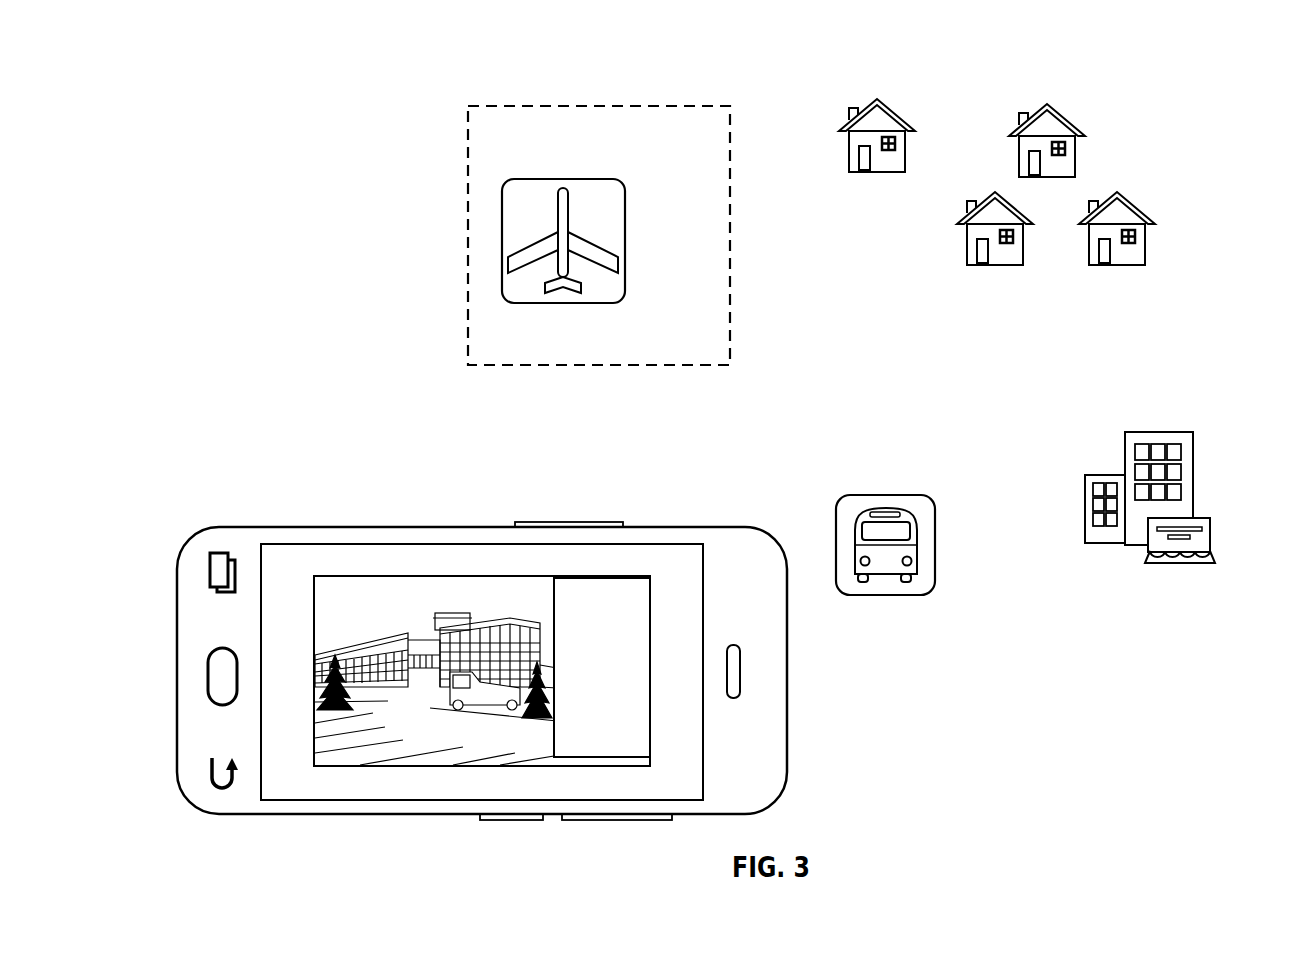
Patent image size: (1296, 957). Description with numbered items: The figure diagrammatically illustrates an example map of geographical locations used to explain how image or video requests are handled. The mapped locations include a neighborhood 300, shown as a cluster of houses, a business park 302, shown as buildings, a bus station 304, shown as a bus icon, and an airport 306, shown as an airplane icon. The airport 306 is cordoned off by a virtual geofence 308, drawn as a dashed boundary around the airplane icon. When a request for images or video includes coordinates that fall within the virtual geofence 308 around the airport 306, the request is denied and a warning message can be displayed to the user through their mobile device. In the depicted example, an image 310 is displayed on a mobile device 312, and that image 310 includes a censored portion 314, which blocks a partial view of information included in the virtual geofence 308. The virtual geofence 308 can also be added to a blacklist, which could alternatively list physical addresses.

The neighborhood 300 is at (1168, 84).
The business park 302 is at (1168, 421).
The bus station 304 is at (890, 474).
The airport 306 is at (517, 170).
The virtual geofence 308 is at (730, 292).
The image 310 is at (393, 633).
The mobile device 312 is at (523, 651).
The censored portion 314 is at (628, 575).